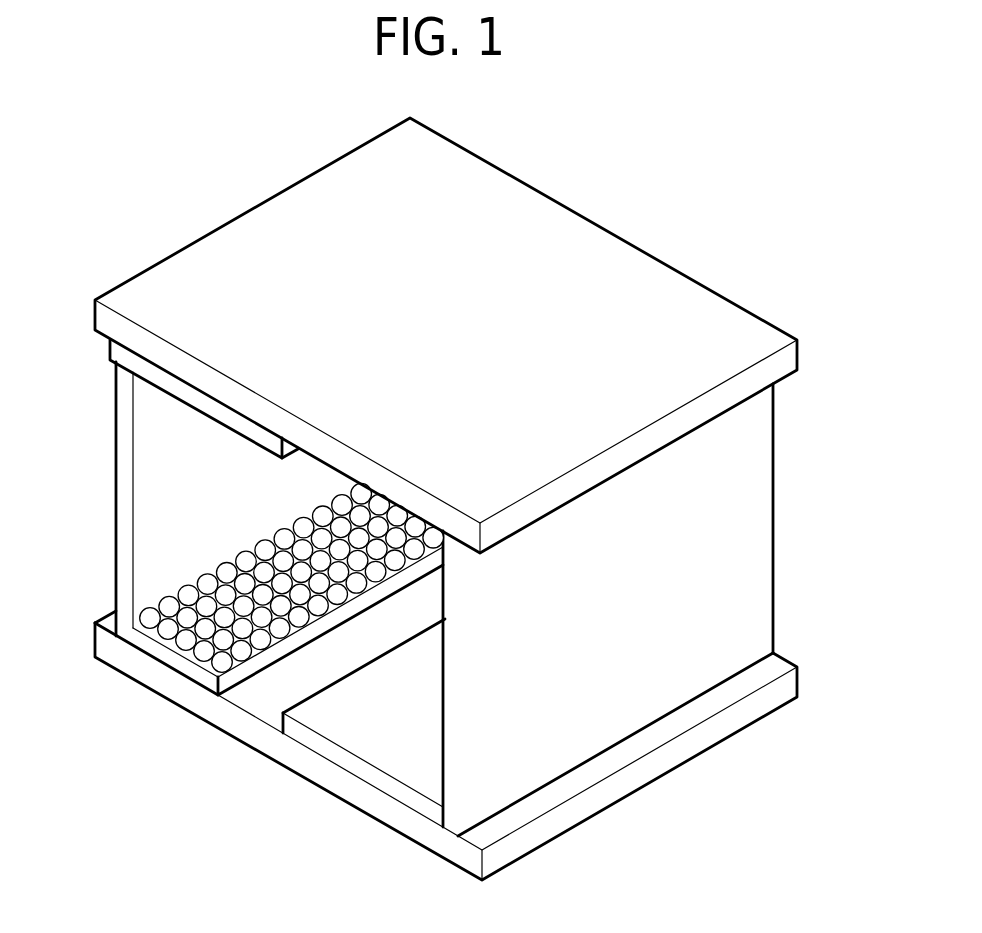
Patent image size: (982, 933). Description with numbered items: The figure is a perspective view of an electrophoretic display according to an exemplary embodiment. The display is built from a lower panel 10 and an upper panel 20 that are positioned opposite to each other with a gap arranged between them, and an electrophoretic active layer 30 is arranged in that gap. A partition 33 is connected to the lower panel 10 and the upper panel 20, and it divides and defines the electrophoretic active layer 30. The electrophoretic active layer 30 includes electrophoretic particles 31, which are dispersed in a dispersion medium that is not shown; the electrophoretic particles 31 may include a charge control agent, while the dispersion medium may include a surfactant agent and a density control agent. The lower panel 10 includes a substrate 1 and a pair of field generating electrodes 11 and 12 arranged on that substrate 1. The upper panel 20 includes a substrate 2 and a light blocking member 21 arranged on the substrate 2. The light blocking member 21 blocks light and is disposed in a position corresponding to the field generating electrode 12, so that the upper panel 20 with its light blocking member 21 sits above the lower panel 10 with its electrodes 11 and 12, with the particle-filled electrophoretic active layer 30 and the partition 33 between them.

The substrate 1 is at (435, 837).
The lower panel 10 is at (420, 736).
The field generating electrode 11 is at (358, 770).
The field generating electrode 12 is at (153, 648).
The substrate 2 is at (780, 372).
The upper panel 20 is at (438, 335).
The light blocking member 21 is at (143, 368).
The electrophoretic active layer 30 is at (447, 599).
The electrophoretic particles 31 is at (223, 663).
The partition 33 is at (757, 547).